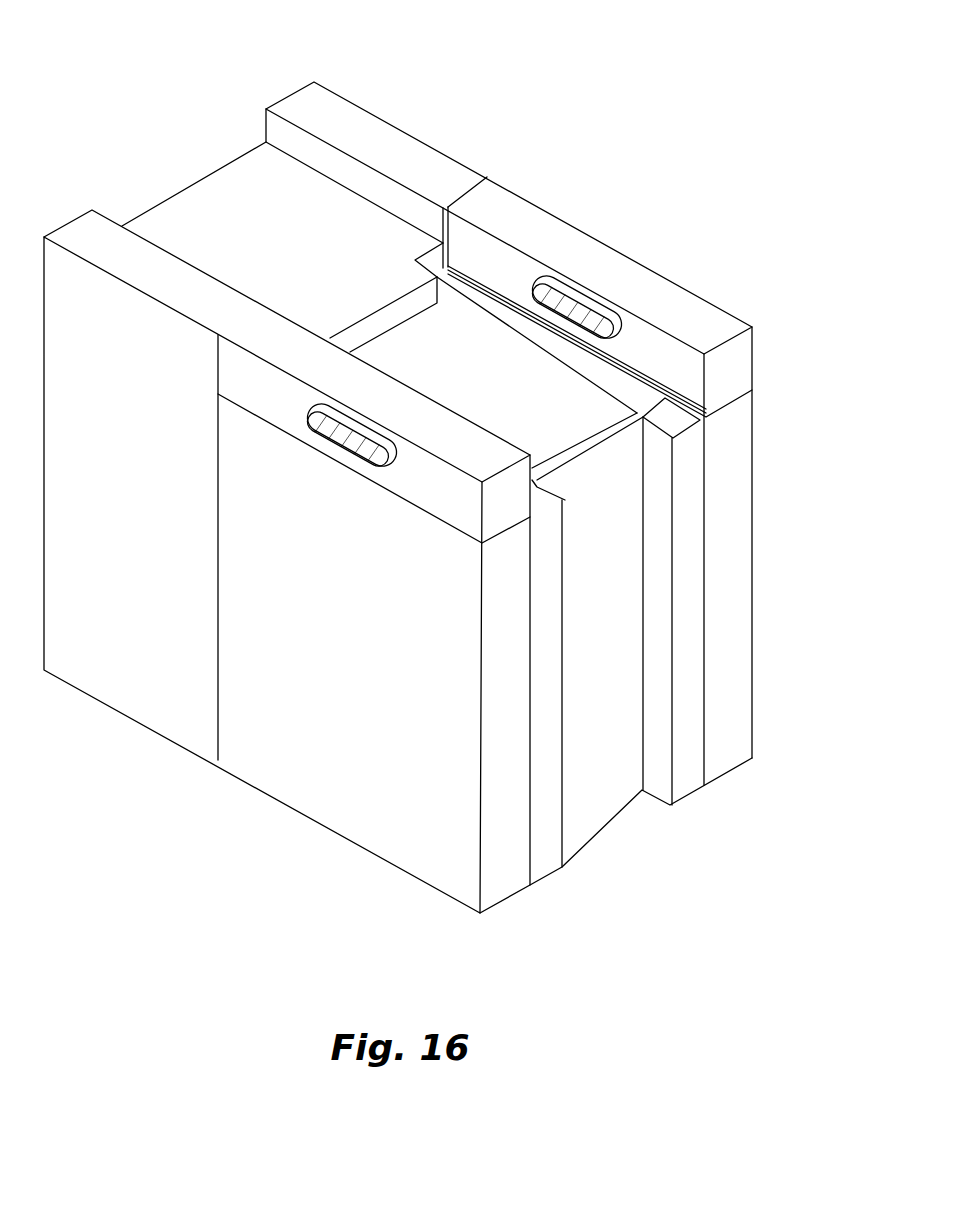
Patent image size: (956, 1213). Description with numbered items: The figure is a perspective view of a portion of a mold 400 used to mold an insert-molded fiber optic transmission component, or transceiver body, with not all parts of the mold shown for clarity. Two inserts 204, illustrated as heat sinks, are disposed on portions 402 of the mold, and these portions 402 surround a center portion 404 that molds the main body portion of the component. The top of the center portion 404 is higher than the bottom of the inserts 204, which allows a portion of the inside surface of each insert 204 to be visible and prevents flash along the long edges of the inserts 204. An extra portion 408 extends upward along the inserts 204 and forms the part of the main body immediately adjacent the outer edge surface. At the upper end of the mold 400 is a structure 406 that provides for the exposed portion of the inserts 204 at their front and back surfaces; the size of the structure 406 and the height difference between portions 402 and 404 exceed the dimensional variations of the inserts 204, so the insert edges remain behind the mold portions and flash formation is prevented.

The mold 400 is at (587, 96).
The portions 402 is at (758, 432).
The center portion 404 is at (612, 812).
The structure 406 is at (441, 215).
The extra portion 408 is at (620, 365).
The insert 204 is at (690, 290).